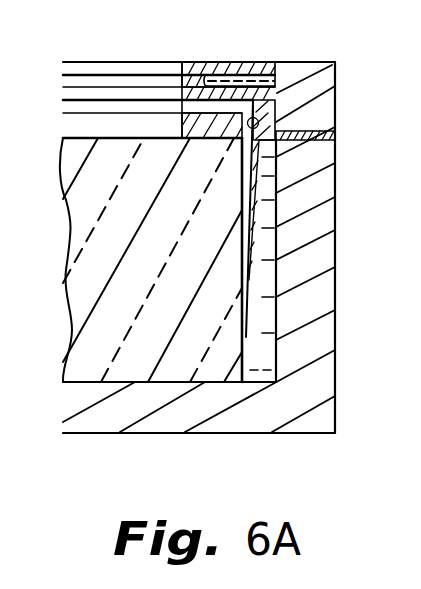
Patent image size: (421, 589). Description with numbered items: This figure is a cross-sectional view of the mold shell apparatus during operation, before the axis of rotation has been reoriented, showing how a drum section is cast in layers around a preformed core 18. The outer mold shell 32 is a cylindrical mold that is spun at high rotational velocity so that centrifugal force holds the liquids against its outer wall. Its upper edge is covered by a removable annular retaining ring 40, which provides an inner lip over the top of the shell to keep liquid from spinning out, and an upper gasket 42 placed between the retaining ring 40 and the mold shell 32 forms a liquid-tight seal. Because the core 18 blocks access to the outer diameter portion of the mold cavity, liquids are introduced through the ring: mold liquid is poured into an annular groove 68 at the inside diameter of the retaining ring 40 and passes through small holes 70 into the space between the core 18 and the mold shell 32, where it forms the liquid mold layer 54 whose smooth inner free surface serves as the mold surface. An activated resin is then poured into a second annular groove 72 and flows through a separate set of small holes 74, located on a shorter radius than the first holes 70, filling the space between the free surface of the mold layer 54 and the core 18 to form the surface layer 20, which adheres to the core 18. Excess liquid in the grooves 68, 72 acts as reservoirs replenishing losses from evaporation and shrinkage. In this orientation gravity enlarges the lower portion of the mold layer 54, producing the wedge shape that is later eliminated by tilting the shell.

The core 18 is at (78, 199).
The surface layer 20 is at (247, 272).
The mold shell 32 is at (333, 286).
The retaining ring 40 is at (277, 122).
The upper gasket 42 is at (338, 131).
The liquid mold layer 54 is at (265, 362).
The annular groove 68 is at (225, 101).
The small holes 70 is at (286, 102).
The second annular groove 72 is at (219, 98).
The small holes 74 is at (283, 112).